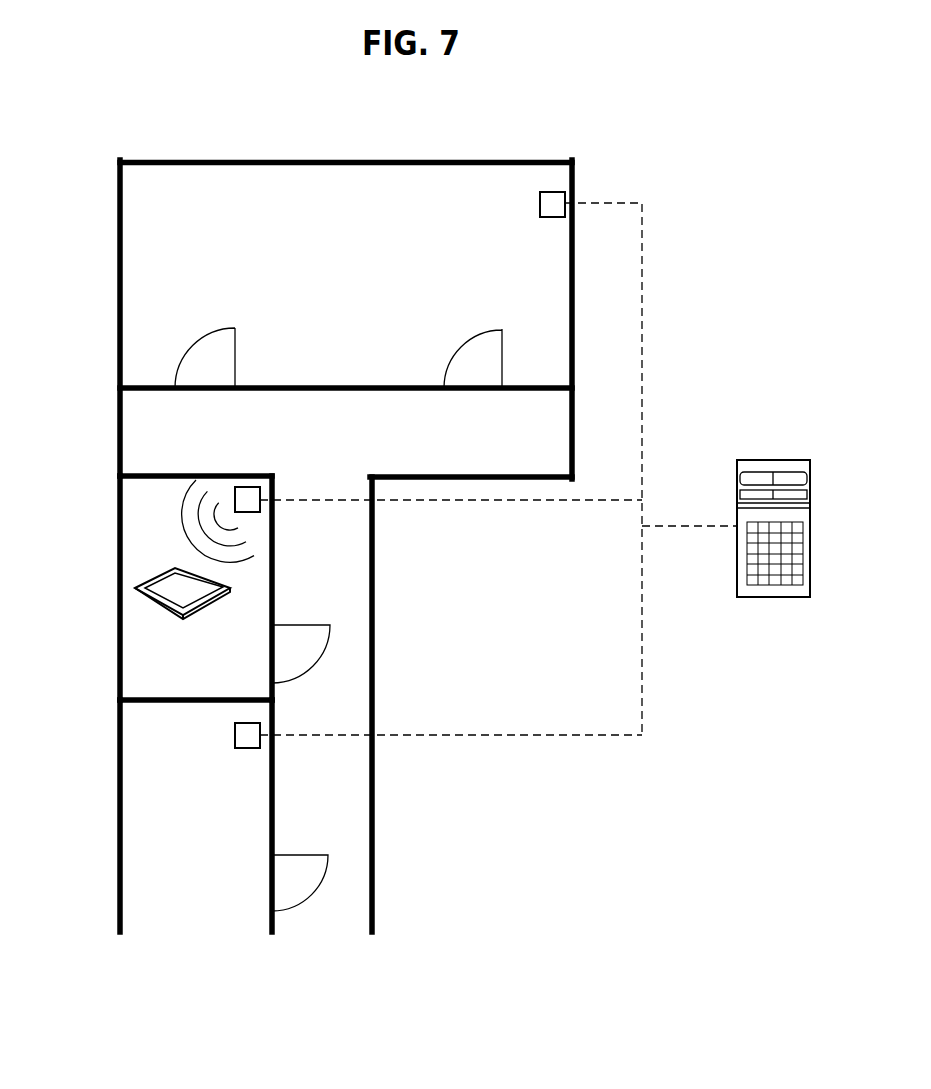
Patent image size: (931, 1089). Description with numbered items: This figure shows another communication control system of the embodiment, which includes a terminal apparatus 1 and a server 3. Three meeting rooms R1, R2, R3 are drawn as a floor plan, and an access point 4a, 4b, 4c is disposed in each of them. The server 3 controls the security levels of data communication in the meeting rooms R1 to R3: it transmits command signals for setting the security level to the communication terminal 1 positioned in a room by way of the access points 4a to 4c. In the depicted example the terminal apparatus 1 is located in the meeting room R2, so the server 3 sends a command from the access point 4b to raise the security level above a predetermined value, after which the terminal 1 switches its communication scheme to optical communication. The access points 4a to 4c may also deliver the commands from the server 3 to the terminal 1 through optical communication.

The terminal apparatus 1 is at (173, 610).
The server 3 is at (772, 458).
The access point 4a is at (235, 734).
The access point 4b is at (244, 486).
The access point 4c is at (540, 204).
The meeting room R1 is at (118, 820).
The meeting room R2 is at (118, 583).
The meeting room R3 is at (117, 273).